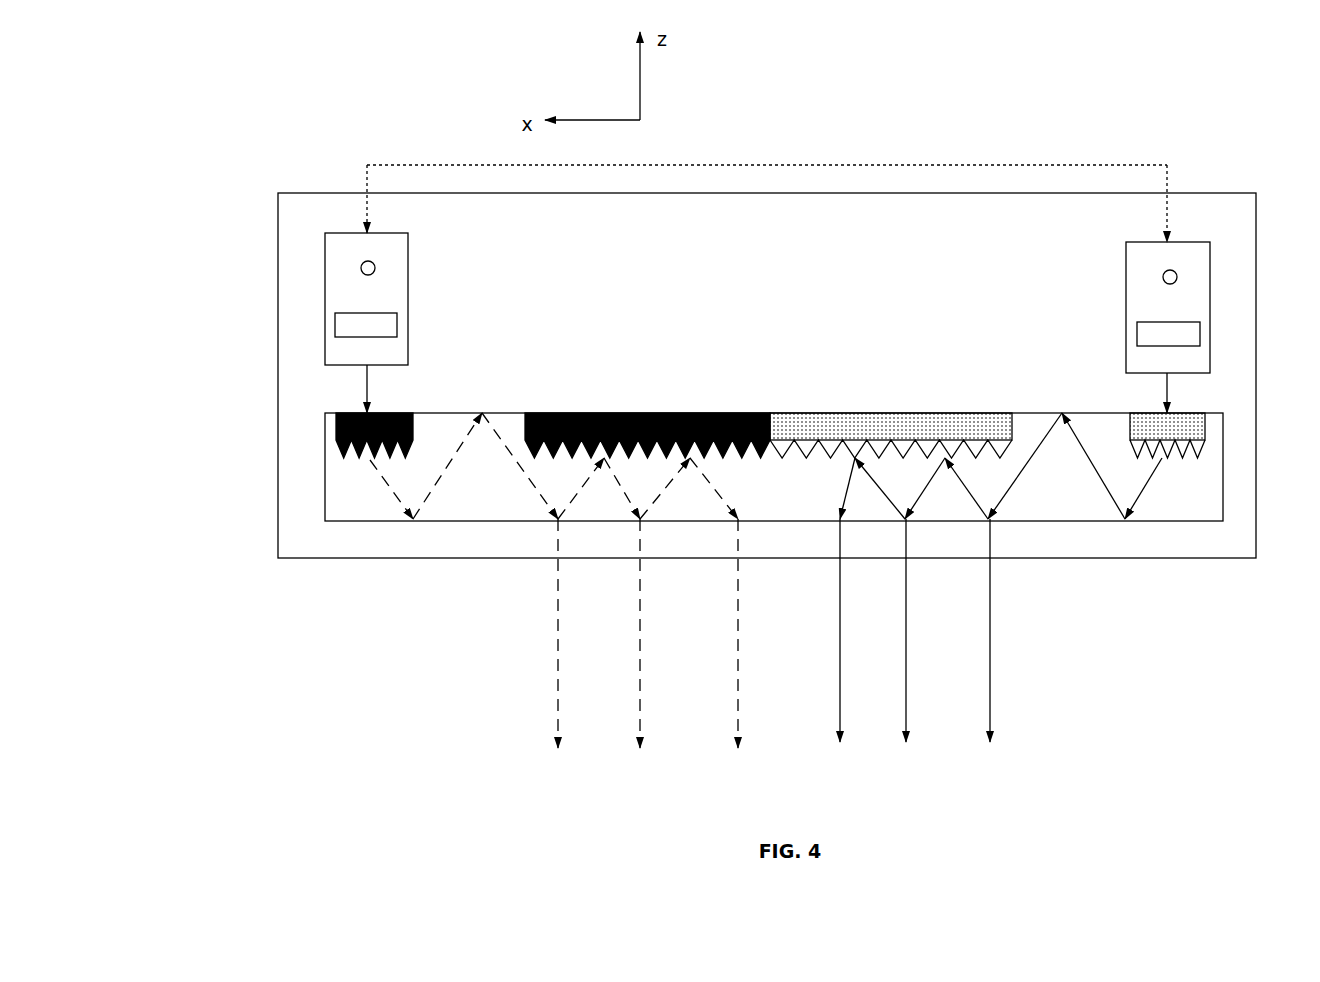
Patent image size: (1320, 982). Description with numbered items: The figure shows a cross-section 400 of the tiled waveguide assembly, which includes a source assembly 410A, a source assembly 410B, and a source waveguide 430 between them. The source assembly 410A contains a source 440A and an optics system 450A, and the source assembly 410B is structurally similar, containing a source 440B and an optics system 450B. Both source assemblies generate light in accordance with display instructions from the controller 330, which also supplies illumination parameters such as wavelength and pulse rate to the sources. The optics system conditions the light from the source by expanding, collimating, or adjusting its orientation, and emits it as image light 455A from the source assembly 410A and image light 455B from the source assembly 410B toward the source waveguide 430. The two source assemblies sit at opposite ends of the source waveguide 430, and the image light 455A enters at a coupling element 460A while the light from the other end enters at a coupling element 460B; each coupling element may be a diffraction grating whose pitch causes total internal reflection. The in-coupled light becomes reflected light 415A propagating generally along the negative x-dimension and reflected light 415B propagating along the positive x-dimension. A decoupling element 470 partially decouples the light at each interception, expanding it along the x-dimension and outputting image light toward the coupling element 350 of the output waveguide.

The cross-section 400 is at (179, 98).
The controller 330 is at (775, 165).
The source waveguide 430 is at (302, 521).
The source assembly 410A is at (325, 245).
The source assembly 410B is at (1196, 242).
The source 440A is at (375, 268).
The source 440B is at (1163, 277).
The optics system 450A is at (397, 325).
The optics system 450B is at (1137, 332).
The image light 455A is at (367, 381).
The image light 455B is at (1163, 400).
The coupling element 460A is at (336, 432).
The coupling element 460B is at (1180, 427).
The decoupling element 470 is at (658, 413).
The reflected light 415A is at (520, 464).
The reflected light 415B is at (1034, 457).
The coupling element 350 is at (786, 800).